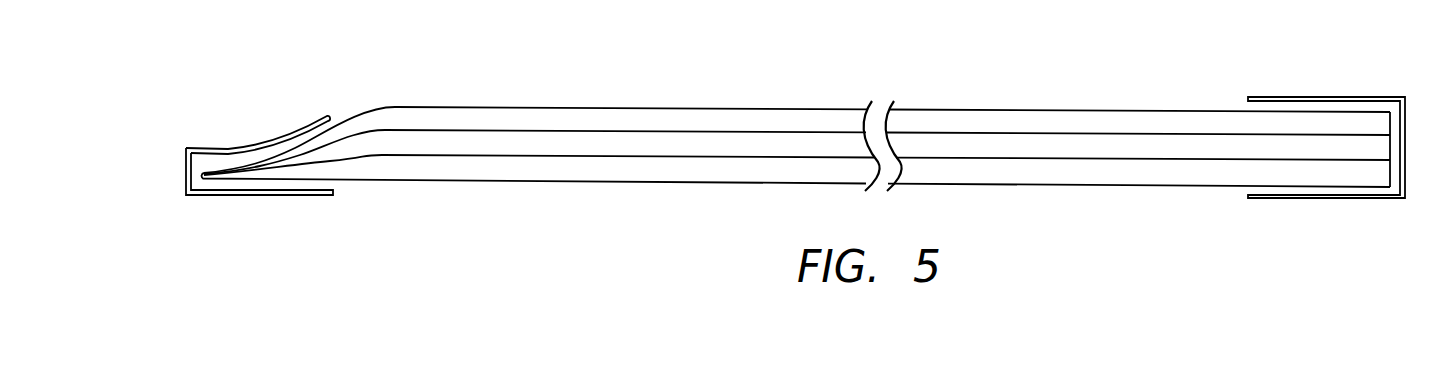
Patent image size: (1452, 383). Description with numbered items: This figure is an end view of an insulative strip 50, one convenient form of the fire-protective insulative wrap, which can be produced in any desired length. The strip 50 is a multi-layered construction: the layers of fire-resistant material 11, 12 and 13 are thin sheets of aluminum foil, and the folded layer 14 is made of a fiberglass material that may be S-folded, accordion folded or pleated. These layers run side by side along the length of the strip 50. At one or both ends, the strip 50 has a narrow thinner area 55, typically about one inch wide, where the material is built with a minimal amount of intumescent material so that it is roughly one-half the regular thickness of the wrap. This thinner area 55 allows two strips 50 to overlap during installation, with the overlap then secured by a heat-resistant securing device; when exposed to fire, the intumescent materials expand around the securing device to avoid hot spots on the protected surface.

The strip 50 is at (667, 96).
The thinner area 55 is at (253, 148).
The layer of fire-resistant material 11 is at (403, 107).
The folded layer 14 is at (443, 130).
The layer of fire-resistant material 12 is at (445, 155).
The layer of fire-resistant material 13 is at (400, 182).